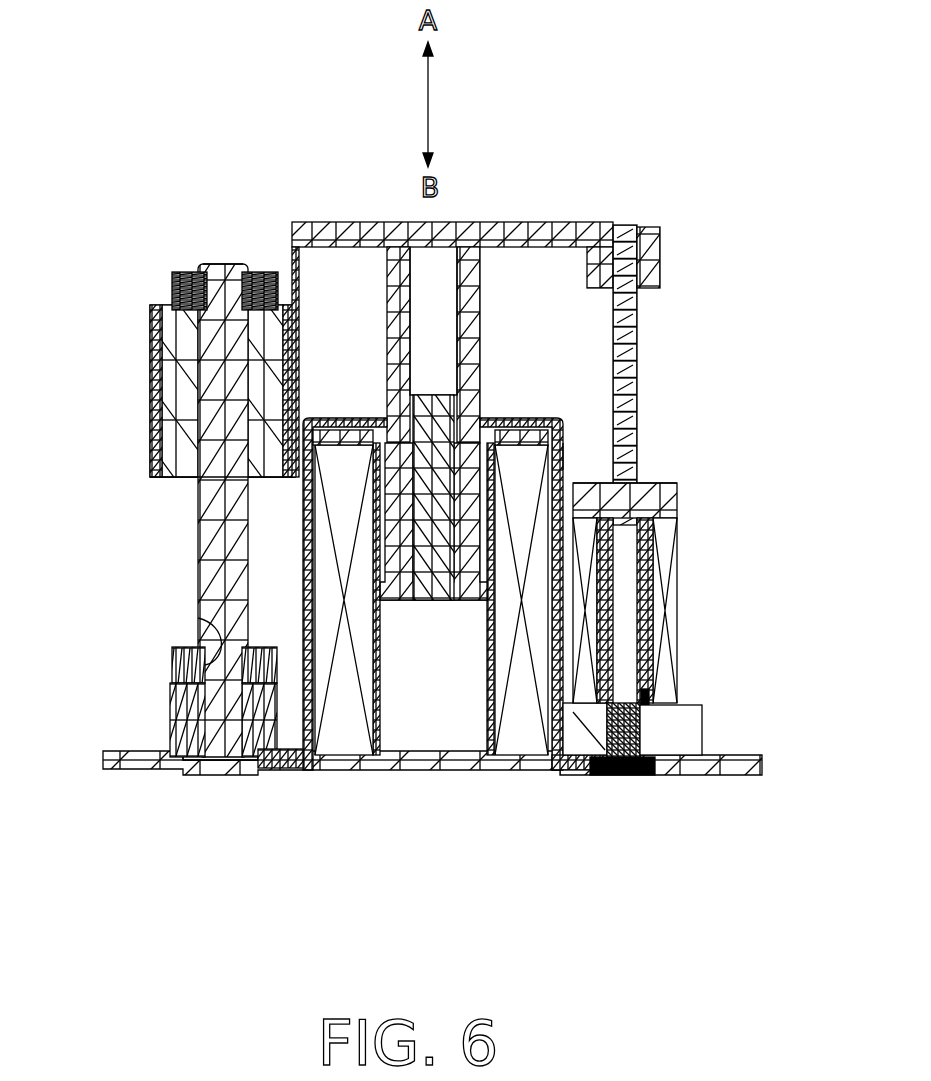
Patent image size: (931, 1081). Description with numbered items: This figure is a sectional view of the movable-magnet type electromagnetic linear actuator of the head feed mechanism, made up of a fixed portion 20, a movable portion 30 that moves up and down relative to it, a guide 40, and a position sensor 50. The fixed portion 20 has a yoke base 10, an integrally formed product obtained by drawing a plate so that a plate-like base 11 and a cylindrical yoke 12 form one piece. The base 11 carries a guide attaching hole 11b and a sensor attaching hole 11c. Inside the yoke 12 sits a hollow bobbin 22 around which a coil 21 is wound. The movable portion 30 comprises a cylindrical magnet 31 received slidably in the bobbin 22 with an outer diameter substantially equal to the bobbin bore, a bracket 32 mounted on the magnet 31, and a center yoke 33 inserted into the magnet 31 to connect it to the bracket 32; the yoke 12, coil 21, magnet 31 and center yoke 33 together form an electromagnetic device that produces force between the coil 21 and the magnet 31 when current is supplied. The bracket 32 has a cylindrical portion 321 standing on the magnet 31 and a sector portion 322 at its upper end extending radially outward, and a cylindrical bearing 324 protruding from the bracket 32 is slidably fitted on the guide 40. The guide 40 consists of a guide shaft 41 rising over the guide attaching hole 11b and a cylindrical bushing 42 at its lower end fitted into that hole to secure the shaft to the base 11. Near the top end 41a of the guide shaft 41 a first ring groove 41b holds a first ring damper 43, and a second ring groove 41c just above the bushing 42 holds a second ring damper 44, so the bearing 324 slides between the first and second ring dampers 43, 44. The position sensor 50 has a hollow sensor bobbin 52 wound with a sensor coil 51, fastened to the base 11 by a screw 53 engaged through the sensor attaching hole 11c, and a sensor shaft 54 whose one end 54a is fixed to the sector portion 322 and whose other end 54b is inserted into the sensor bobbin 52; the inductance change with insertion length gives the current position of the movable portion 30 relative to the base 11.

The yoke base 10 is at (565, 443).
The base 11 is at (137, 770).
The guide attaching hole 11b is at (202, 772).
The sensor attaching hole 11c is at (700, 758).
The yoke 12 is at (303, 690).
The fixed portion 20 is at (391, 803).
The coil 21 is at (590, 772).
The bobbin 22 is at (337, 772).
The movable portion 30 is at (550, 185).
The magnet 31 is at (455, 503).
The bracket 32 is at (548, 223).
The cylindrical portion 321 is at (380, 303).
The sector portion 322 is at (488, 228).
The bearing 324 is at (158, 355).
The center yoke 33 is at (453, 545).
The guide 40 is at (185, 571).
The guide shaft 41 is at (198, 523).
The top end 41a is at (228, 265).
The first ring groove 41b is at (237, 283).
The second ring groove 41c is at (198, 618).
The bushing 42 is at (170, 727).
The first ring damper 43 is at (178, 272).
The second ring damper 44 is at (175, 665).
The position sensor 50 is at (662, 368).
The sensor coil 51 is at (678, 558).
The sensor bobbin 52 is at (678, 498).
The screw 53 is at (635, 768).
The sensor shaft 54 is at (640, 313).
The one end of sensor shaft 54a is at (630, 225).
The other end of sensor shaft 54b is at (627, 507).